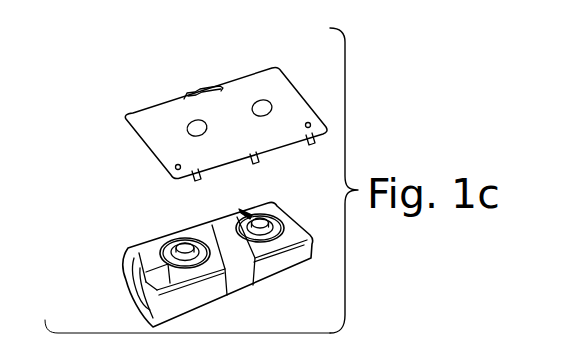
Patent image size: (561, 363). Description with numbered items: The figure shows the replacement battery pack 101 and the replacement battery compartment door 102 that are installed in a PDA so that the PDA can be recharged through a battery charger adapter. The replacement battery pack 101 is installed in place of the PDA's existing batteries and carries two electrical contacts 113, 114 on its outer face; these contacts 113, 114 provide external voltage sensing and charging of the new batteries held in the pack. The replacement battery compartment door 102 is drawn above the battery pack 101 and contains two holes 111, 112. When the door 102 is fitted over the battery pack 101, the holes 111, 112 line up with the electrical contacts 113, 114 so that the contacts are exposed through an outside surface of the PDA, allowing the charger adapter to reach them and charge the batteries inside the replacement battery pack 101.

The replacement battery pack 101 is at (140, 289).
The replacement battery compartment door 102 is at (152, 137).
The hole 111 is at (196, 125).
The hole 112 is at (260, 102).
The electrical contact 113 is at (185, 243).
The electrical contact 114 is at (255, 218).